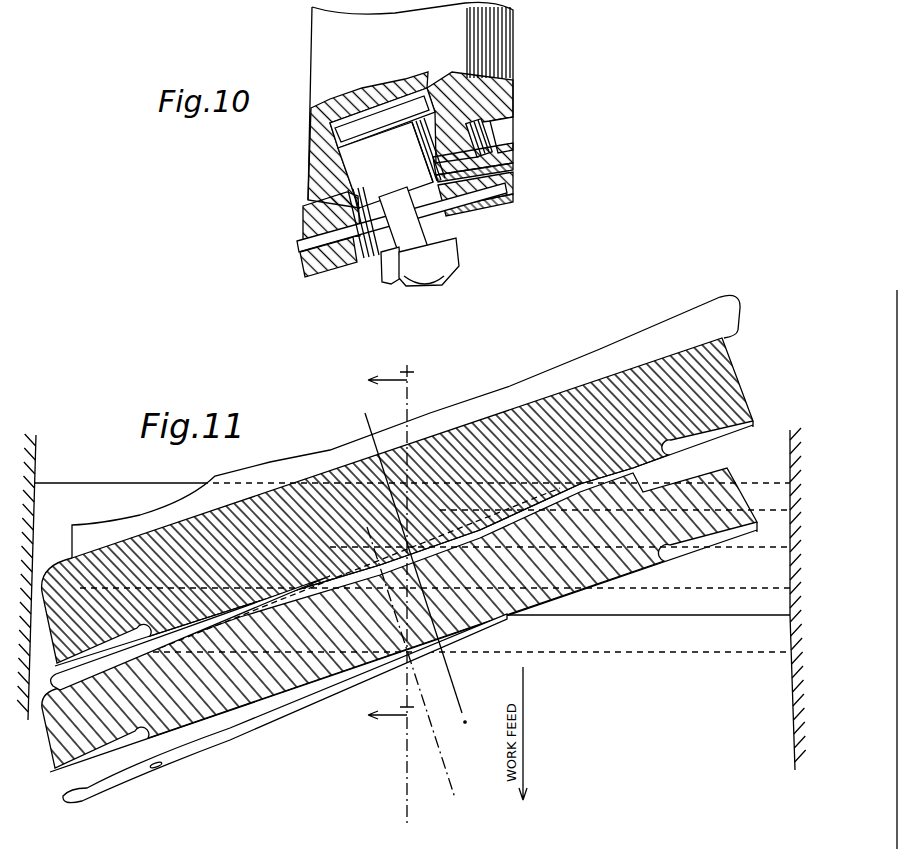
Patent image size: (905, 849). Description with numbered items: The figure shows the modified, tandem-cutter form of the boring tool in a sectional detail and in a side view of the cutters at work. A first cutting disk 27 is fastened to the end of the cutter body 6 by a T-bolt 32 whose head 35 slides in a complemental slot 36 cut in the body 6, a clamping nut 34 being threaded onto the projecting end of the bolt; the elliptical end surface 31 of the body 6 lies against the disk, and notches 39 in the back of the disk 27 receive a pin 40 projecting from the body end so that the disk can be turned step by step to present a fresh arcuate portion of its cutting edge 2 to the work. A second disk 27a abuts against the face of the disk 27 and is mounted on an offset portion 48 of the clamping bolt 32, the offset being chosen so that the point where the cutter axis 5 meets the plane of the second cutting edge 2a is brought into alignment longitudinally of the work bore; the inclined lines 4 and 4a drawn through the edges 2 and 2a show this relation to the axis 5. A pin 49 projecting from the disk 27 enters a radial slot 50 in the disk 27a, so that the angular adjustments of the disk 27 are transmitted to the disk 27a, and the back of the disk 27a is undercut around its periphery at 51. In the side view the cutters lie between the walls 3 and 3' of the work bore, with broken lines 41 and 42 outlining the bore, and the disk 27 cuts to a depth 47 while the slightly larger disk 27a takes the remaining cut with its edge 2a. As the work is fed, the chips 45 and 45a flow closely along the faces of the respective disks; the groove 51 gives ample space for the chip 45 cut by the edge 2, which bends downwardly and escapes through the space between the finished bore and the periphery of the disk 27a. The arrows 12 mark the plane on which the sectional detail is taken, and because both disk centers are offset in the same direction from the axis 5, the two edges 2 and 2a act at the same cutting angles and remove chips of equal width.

In FIG. 10, the cutting edge 2 is at (516, 174).
In FIG. 11, the cutting edge 2 is at (757, 429).
In FIG. 10, the cutting edge 2a is at (515, 206).
In FIG. 11, the cutting edge 2a is at (752, 538).
In FIG. 11, the work guide bushing 3 is at (656, 599).
In FIG. 11, the work guide 3' is at (403, 577).
In FIG. 11, the tool edge line 4 is at (462, 677).
In FIG. 11, the second tool edge line 4a is at (448, 772).
In FIG. 11, the cutter axis 5 is at (405, 801).
In FIG. 10, the cutter body 6 is at (318, 75).
In FIG. 11, the cutter body 6 is at (583, 355).
In FIG. 11, the section line 12 is at (391, 589).
In FIG. 10, the disk 27 is at (515, 158).
In FIG. 11, the disk 27 is at (718, 362).
In FIG. 10, the second disk 27a is at (515, 190).
In FIG. 11, the second disk 27a is at (537, 603).
In FIG. 10, the elliptical end surface 31 is at (508, 146).
In FIG. 11, the elliptical end surface 31 is at (738, 332).
In FIG. 10, the T-bolt 32 is at (387, 146).
In FIG. 10, the clamping nut 34 is at (448, 278).
In FIG. 10, the head 35 is at (394, 106).
In FIG. 10, the slot 36 is at (418, 90).
In FIG. 10, the notches 39 is at (303, 212).
In FIG. 10, the pin 40 is at (490, 131).
In FIG. 11, the work outline 41 is at (760, 488).
In FIG. 11, the holder edge 42 is at (644, 548).
In FIG. 11, the chip 45 is at (56, 681).
In FIG. 11, the chip 45a is at (208, 742).
In FIG. 11, the depth 47 is at (790, 579).
In FIG. 10, the offset portion 48 is at (402, 214).
In FIG. 10, the pin 49 is at (372, 250).
In FIG. 10, the radial slot 50 is at (355, 256).
In FIG. 10, the undercut groove 51 is at (300, 252).
In FIG. 11, the undercut groove 51 is at (700, 476).